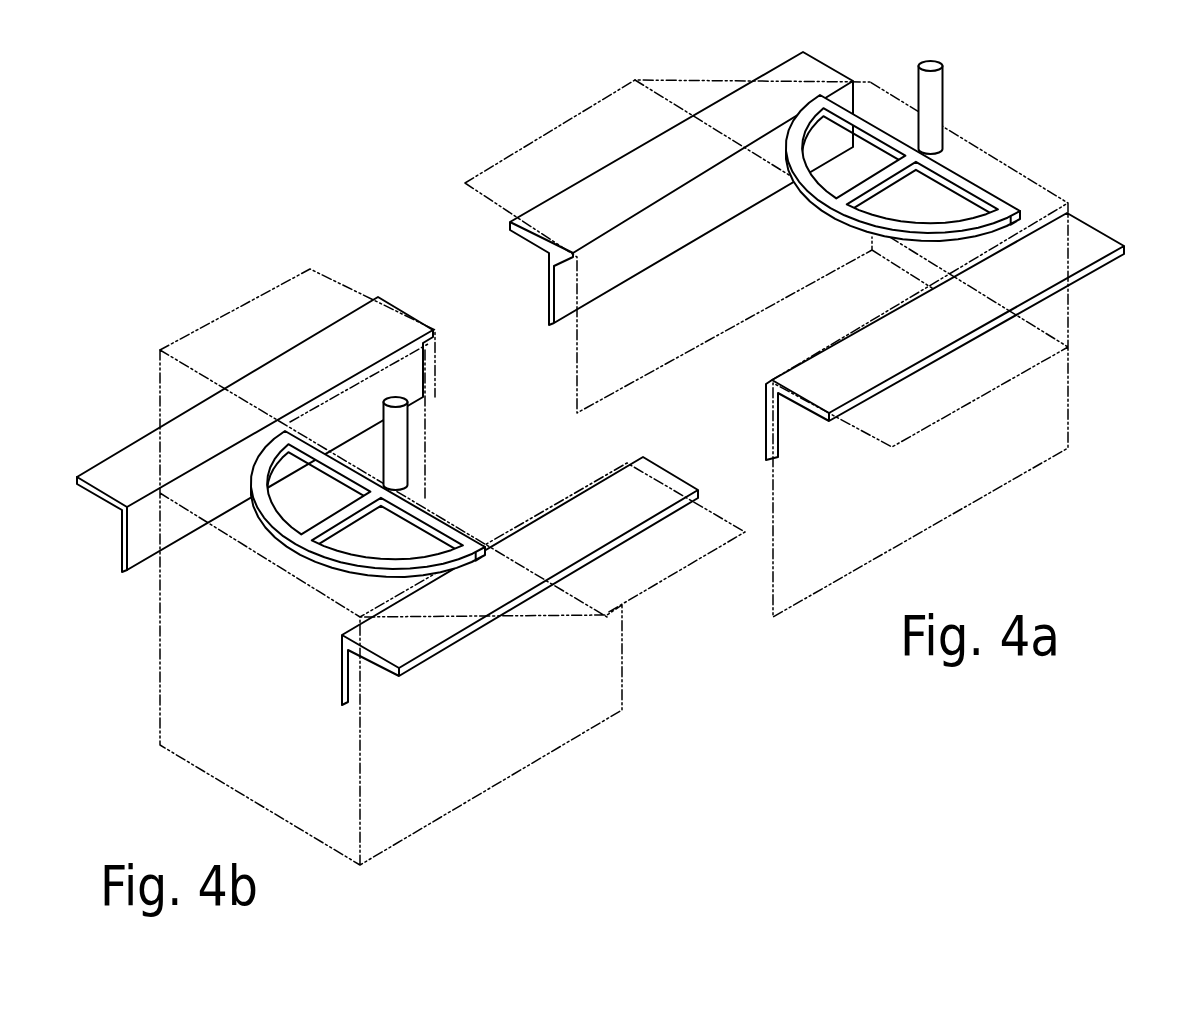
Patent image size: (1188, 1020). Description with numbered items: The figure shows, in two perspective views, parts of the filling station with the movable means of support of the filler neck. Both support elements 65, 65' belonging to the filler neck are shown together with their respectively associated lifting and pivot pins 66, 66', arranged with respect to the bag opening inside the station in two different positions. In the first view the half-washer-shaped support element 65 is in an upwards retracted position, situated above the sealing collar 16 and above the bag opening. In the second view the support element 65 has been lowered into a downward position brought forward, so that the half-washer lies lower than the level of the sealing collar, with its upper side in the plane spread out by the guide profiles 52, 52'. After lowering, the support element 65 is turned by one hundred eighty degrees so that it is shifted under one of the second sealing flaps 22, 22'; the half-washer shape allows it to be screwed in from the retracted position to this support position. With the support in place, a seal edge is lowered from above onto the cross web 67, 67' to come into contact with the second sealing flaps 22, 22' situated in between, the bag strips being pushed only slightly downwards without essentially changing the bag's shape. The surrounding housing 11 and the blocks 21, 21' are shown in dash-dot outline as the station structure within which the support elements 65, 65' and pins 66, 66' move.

In FIG. 4b, the housing 11 is at (613, 758).
In FIG. 4a, the sealing collar 16 is at (540, 178).
In FIG. 4b, the block 21 is at (297, 287).
In FIG. 4a, the block 21' is at (851, 348).
In FIG. 4b, the second sealing flap 22 is at (255, 406).
In FIG. 4a, the second sealing flap 22' is at (964, 331).
In FIG. 4b, the flange 52 is at (93, 450).
In FIG. 4b, the guide profile 52' is at (520, 605).
In FIG. 4b, the support element 65 is at (296, 542).
In FIG. 4a, the support element 65' is at (807, 203).
In FIG. 4b, the lifting and pivot pin 66 is at (379, 365).
In FIG. 4a, the lifting and pivot pin 66' is at (1004, 106).
In FIG. 4b, the cross web 67 is at (363, 504).
In FIG. 4a, the half-round holder 67' is at (923, 192).